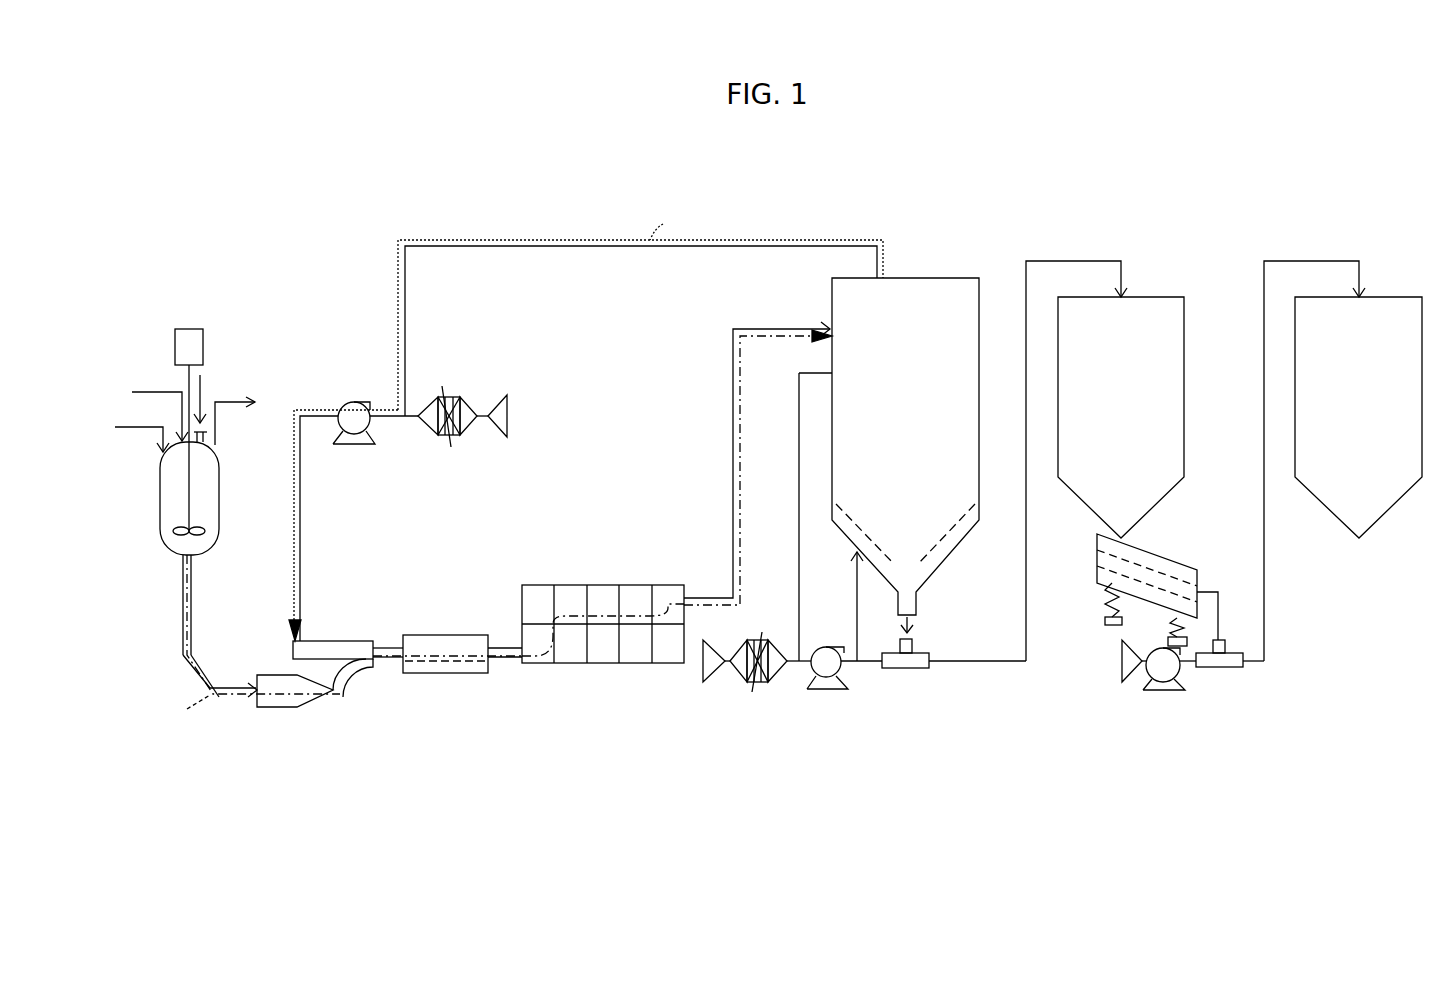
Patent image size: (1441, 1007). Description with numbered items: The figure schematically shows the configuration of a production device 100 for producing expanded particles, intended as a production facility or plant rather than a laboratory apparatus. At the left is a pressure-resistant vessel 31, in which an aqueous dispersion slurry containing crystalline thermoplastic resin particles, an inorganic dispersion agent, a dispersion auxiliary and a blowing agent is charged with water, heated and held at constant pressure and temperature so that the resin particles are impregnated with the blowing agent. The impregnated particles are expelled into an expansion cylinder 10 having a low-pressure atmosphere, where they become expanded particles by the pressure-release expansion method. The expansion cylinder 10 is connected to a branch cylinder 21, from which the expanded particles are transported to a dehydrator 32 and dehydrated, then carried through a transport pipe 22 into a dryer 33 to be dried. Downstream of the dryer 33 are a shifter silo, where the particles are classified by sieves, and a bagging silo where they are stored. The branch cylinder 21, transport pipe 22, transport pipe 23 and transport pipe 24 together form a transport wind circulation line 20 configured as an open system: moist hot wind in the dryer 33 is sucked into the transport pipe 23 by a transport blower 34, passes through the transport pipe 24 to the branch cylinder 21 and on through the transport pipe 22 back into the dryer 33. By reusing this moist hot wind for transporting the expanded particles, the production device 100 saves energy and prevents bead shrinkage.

The production device 100 is at (1216, 170).
The expansion cylinder 10 is at (290, 712).
The transport wind circulation line 20 is at (853, 222).
The branch cylinder 21 is at (338, 641).
The transport pipe 22 is at (733, 452).
The transport pipe 23 is at (553, 246).
The transport pipe 24 is at (303, 512).
The pressure-resistant vessel 31 is at (160, 494).
The dehydrator 32 is at (603, 585).
The dryer 33 is at (913, 278).
The transport blower 34 is at (352, 401).